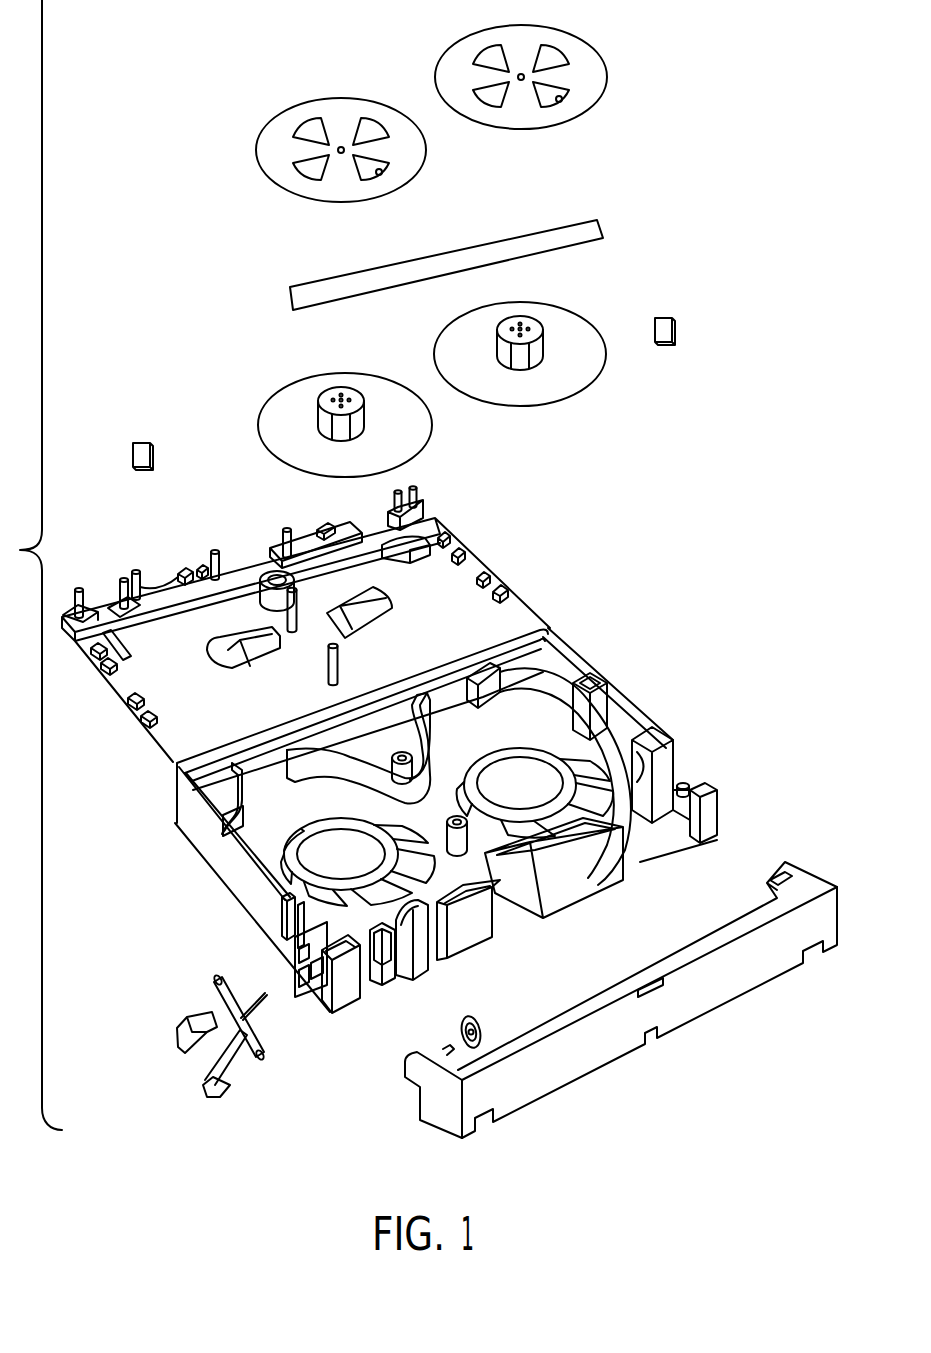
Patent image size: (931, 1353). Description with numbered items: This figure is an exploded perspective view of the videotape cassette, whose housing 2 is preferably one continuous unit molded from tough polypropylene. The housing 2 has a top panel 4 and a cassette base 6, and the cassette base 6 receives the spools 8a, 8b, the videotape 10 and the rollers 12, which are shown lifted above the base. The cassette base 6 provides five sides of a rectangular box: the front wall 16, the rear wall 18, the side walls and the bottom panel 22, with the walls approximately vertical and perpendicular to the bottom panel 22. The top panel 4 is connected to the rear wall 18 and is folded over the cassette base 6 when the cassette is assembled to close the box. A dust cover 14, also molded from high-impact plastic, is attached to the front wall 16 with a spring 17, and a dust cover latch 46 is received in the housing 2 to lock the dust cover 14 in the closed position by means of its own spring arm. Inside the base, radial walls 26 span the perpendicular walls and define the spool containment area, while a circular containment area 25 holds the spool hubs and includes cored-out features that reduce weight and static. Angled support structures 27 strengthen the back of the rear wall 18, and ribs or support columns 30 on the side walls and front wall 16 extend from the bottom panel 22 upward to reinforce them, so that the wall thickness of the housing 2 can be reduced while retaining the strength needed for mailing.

The housing 2 is at (577, 612).
The top panel 4 is at (467, 578).
The cassette base 6 is at (628, 722).
The spool 8a is at (358, 466).
The spool 8b is at (351, 194).
The videotape 10 is at (567, 248).
The rollers 12 is at (662, 347).
The dust cover 14 is at (622, 1041).
The front wall 16 is at (592, 886).
The spring 17 is at (483, 1028).
The rear wall 18 is at (377, 729).
The bottom panel 22 is at (463, 760).
The circular containment area 25 is at (318, 857).
The radial walls 26 is at (345, 773).
The angled support structures 27 is at (207, 787).
The support columns 30 is at (590, 708).
The dust cover latch 46 is at (190, 1079).